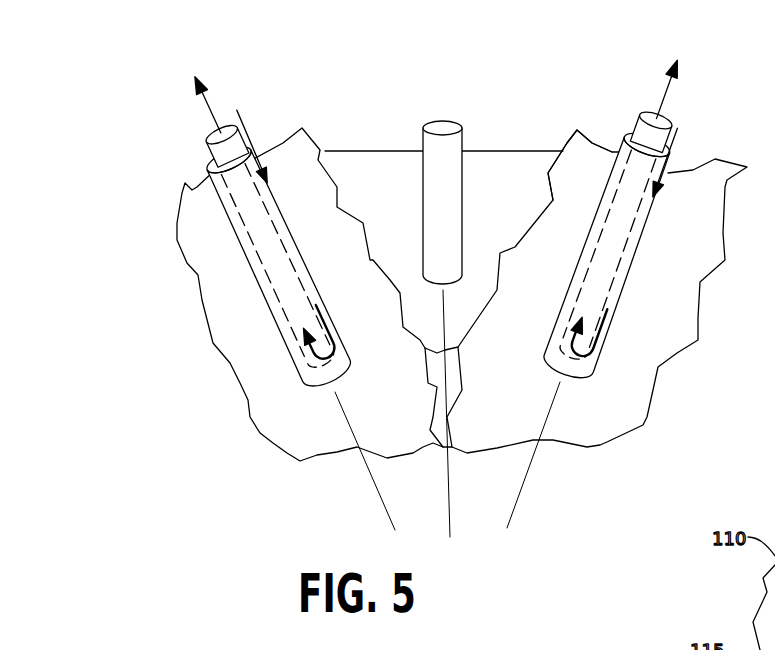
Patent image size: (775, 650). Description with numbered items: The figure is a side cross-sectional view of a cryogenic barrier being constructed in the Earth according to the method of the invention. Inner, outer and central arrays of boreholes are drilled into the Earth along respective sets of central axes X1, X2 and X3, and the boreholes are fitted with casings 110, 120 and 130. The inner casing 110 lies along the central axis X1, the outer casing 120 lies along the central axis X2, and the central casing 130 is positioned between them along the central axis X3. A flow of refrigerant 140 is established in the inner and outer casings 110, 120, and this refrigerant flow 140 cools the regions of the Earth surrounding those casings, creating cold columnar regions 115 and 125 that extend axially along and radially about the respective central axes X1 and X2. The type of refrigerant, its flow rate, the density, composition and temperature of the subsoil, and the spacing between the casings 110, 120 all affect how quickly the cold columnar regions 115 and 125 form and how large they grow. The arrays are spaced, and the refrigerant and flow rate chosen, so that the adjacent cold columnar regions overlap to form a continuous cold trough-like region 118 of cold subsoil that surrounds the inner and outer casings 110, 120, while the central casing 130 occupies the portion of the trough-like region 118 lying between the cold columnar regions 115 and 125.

The inner array casing 110 is at (196, 149).
The cold columnar region 115 is at (322, 160).
The cold trough-like region 118 is at (236, 402).
The outer array casing 120 is at (693, 95).
The cold columnar region 125 is at (582, 148).
The central array casing 130 is at (449, 164).
The refrigerant flow 140 is at (228, 100).
The central axis of inner array X1 is at (377, 490).
The central axis of outer array X2 is at (523, 481).
The central axis of central array X3 is at (450, 503).